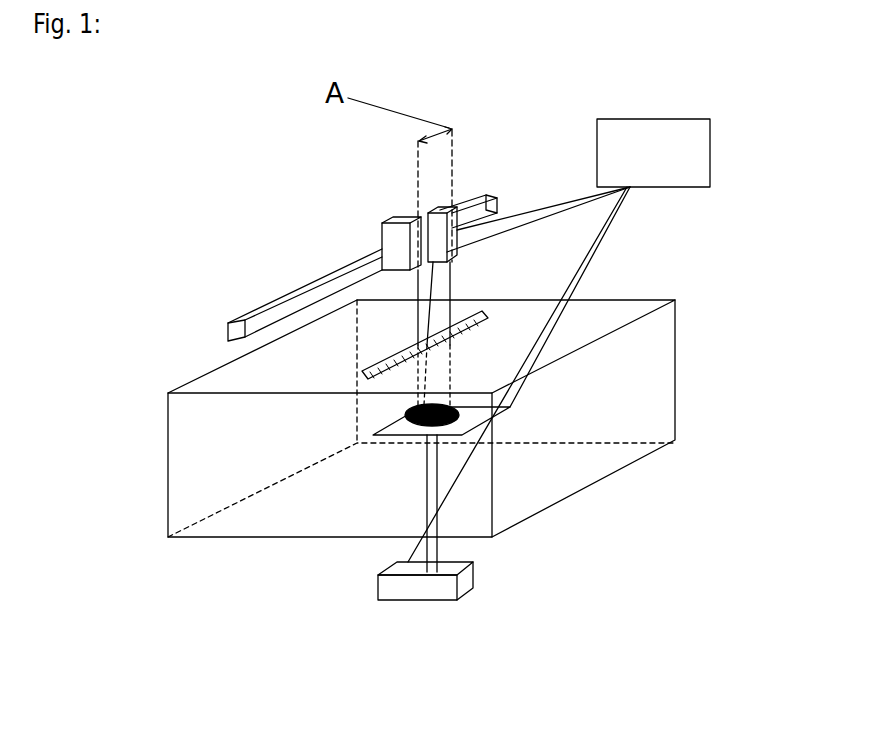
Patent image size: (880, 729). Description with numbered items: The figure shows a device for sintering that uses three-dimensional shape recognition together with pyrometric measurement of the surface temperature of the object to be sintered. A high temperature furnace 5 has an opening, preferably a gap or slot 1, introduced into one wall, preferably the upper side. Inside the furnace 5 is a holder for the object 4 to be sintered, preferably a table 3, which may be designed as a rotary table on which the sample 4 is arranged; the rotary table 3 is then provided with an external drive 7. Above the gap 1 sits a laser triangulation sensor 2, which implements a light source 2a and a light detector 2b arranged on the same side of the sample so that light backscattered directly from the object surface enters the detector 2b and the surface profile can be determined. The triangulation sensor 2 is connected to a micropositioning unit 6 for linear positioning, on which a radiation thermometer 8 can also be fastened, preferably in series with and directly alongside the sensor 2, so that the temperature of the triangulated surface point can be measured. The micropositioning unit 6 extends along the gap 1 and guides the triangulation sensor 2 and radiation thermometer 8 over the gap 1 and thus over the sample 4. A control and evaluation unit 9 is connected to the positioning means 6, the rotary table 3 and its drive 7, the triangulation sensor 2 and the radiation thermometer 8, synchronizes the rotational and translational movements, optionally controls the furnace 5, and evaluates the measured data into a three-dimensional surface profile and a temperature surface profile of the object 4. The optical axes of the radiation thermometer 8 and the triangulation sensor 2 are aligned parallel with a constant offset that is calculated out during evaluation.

The gap 1 is at (366, 372).
The laser triangulation sensor 2 is at (308, 228).
The light source 2a is at (392, 248).
The light detector 2b is at (430, 211).
The table 3 is at (373, 433).
The object 4 is at (407, 416).
The high temperature furnace 5 is at (185, 466).
The micropositioning unit 6 is at (283, 292).
The external drive 7 is at (393, 590).
The radiation thermometer 8 is at (445, 207).
The control and evaluation unit 9 is at (690, 152).